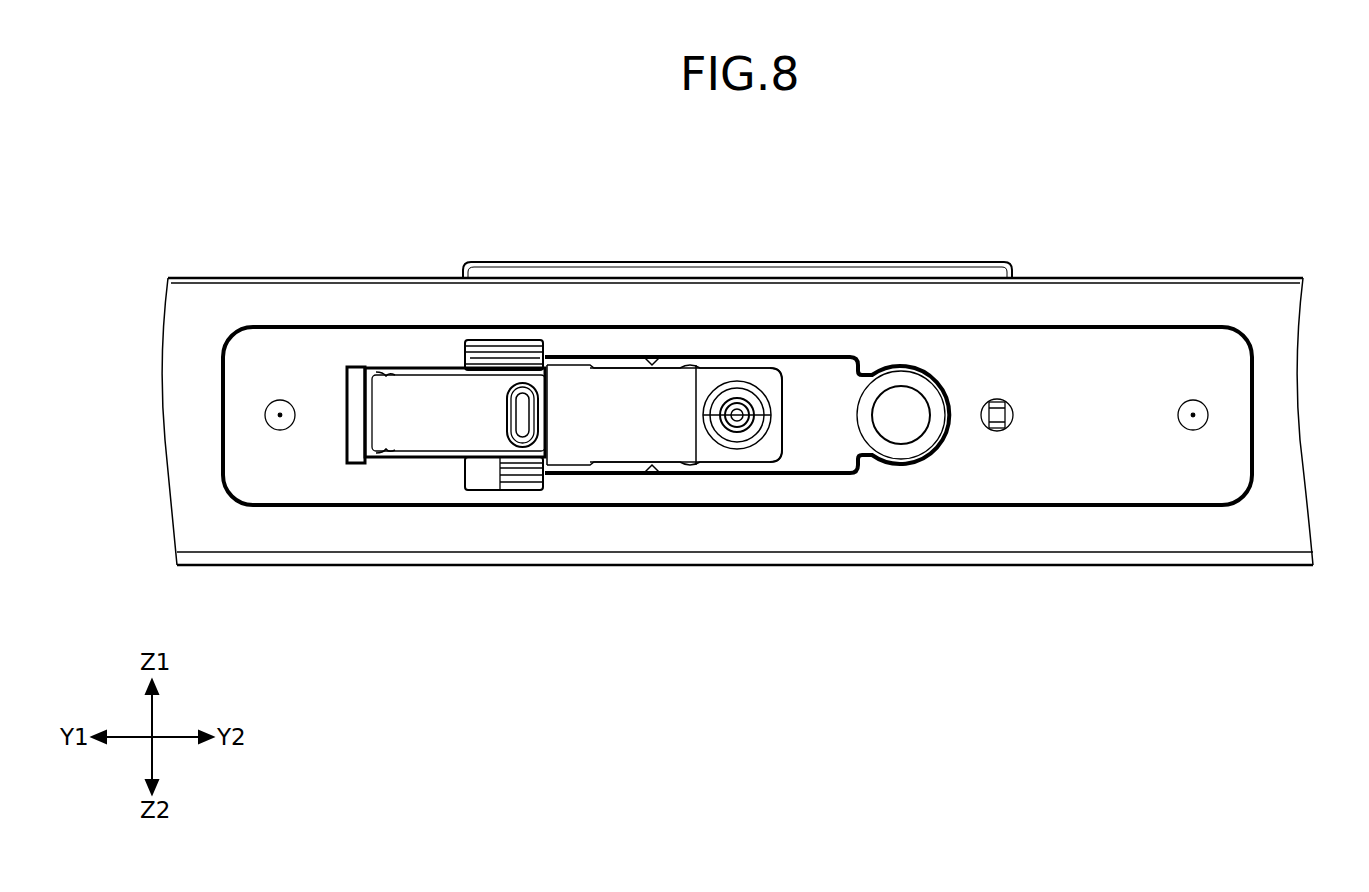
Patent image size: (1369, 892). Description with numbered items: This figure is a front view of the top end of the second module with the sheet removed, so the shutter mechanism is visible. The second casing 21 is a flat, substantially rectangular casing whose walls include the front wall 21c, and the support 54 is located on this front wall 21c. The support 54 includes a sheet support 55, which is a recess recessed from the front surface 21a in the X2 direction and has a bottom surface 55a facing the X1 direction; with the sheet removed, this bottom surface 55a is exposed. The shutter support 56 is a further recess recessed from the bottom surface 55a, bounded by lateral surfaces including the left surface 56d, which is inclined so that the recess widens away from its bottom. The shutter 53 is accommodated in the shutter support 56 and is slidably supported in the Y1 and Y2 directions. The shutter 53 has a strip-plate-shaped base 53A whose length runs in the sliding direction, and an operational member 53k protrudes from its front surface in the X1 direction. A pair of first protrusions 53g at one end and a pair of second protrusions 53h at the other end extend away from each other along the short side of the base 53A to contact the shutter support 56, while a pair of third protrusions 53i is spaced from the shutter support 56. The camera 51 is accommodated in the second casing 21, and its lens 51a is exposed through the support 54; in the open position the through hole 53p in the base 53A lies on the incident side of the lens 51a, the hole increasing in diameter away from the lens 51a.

The second casing 21 is at (757, 386).
The front surface 21a is at (757, 386).
The front wall 21c is at (1275, 307).
The camera 51 is at (738, 421).
The lens 51a is at (738, 421).
The shutter 53 is at (454, 399).
The base 53A is at (454, 399).
The second protrusions 53h is at (382, 375).
The operational member 53k is at (522, 400).
The third protrusions 53i is at (650, 360).
The through hole 53p is at (737, 385).
The first protrusions 53g is at (777, 360).
The support 54 is at (830, 458).
The sheet support 55 is at (1110, 421).
The bottom surface 55a is at (1133, 355).
The shutter support 56 is at (683, 437).
The left surface 56d is at (353, 438).